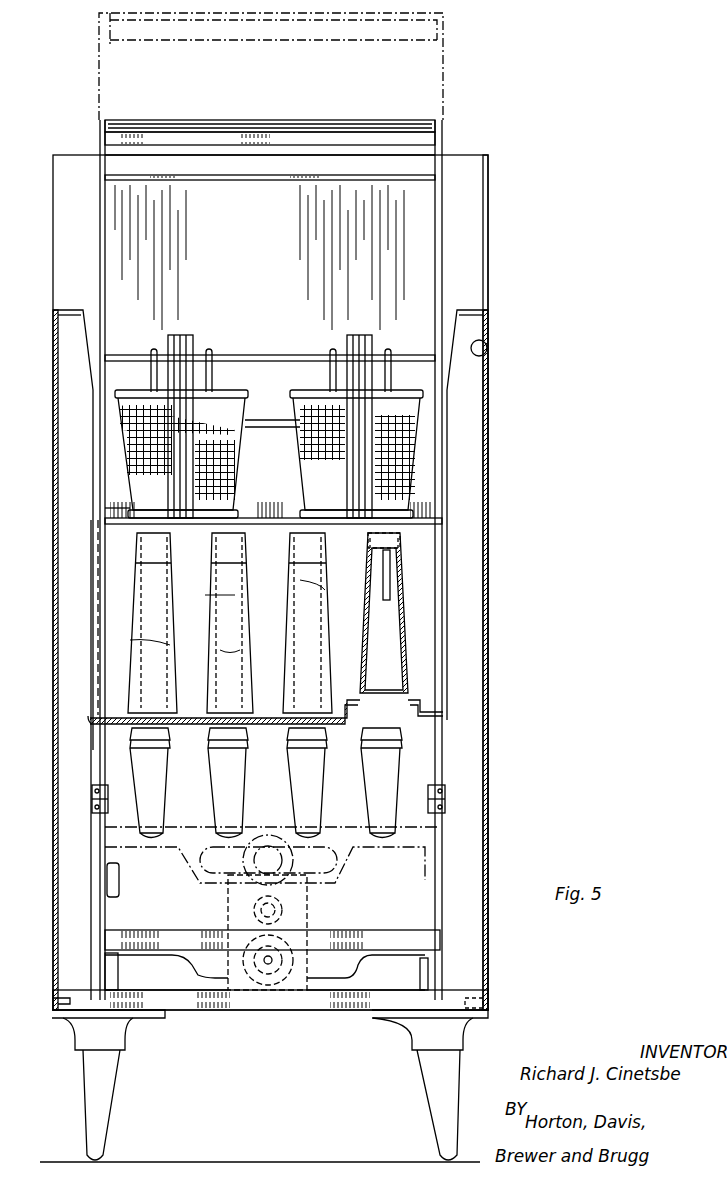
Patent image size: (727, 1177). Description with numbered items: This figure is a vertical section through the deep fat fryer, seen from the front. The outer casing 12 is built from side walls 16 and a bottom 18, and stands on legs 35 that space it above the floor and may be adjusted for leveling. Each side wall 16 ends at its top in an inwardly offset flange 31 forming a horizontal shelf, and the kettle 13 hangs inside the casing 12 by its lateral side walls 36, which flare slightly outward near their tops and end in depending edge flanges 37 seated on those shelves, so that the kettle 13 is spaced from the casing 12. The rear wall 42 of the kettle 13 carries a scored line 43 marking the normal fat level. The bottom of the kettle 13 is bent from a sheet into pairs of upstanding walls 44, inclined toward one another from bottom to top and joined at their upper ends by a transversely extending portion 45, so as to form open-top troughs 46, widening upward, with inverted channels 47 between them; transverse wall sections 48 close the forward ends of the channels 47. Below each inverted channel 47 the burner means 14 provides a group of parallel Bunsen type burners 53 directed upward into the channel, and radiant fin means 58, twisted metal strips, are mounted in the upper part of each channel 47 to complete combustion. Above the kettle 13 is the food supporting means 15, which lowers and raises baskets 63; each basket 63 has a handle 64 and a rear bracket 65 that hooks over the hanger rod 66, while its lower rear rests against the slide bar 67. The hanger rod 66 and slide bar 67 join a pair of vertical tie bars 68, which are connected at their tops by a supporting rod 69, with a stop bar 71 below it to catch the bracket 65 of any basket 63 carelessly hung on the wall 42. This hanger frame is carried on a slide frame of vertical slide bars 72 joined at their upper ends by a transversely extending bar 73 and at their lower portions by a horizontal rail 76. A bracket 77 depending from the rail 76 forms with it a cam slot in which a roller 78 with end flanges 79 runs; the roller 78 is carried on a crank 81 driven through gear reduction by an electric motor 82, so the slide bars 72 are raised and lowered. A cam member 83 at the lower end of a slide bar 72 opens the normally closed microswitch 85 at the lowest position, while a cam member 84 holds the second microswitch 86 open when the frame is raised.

The outer casing 12 is at (490, 433).
The kettle 13 is at (452, 516).
The burner means 14 is at (402, 775).
The food supporting means 15 is at (483, 152).
The side walls 16 is at (492, 700).
The bottom 18 is at (488, 1002).
The inwardly offset flange 31 is at (489, 347).
The legs 35 is at (100, 1106).
The lateral side walls 36 is at (450, 662).
The depending edge flanges 37 is at (478, 322).
The rear wall 42 is at (105, 546).
The scored line 43 is at (280, 428).
The upstanding walls 44 is at (365, 655).
The transversely extending portion 45 is at (382, 542).
The open-top troughs 46 is at (195, 598).
The inverted channels 47 is at (230, 685).
The transverse wall sections 48 is at (150, 695).
The Bunsen type burners 53 is at (150, 765).
The radiant fin means 58 is at (392, 580).
The baskets 63 is at (135, 456).
The handle 64 is at (165, 402).
The bracket 65 is at (212, 352).
The hanger rod 66 is at (280, 355).
The slide bar 67 is at (112, 508).
The vertical tie bars 68 is at (108, 280).
The supporting rod 69 is at (300, 124).
The stop bar 71 is at (252, 181).
The vertical slide bars 72 is at (92, 812).
The transversely extending bar 73 is at (148, 138).
The horizontal rail 76 is at (170, 930).
The bracket 77 is at (235, 970).
The roller 78 is at (290, 990).
The end flanges 79 is at (238, 992).
The crank 81 is at (302, 918).
The electric motor 82 is at (305, 893).
The cam member 83 is at (425, 860).
The cam member 84 is at (110, 968).
The microswitch 85 is at (422, 962).
The microswitch 86 is at (120, 878).